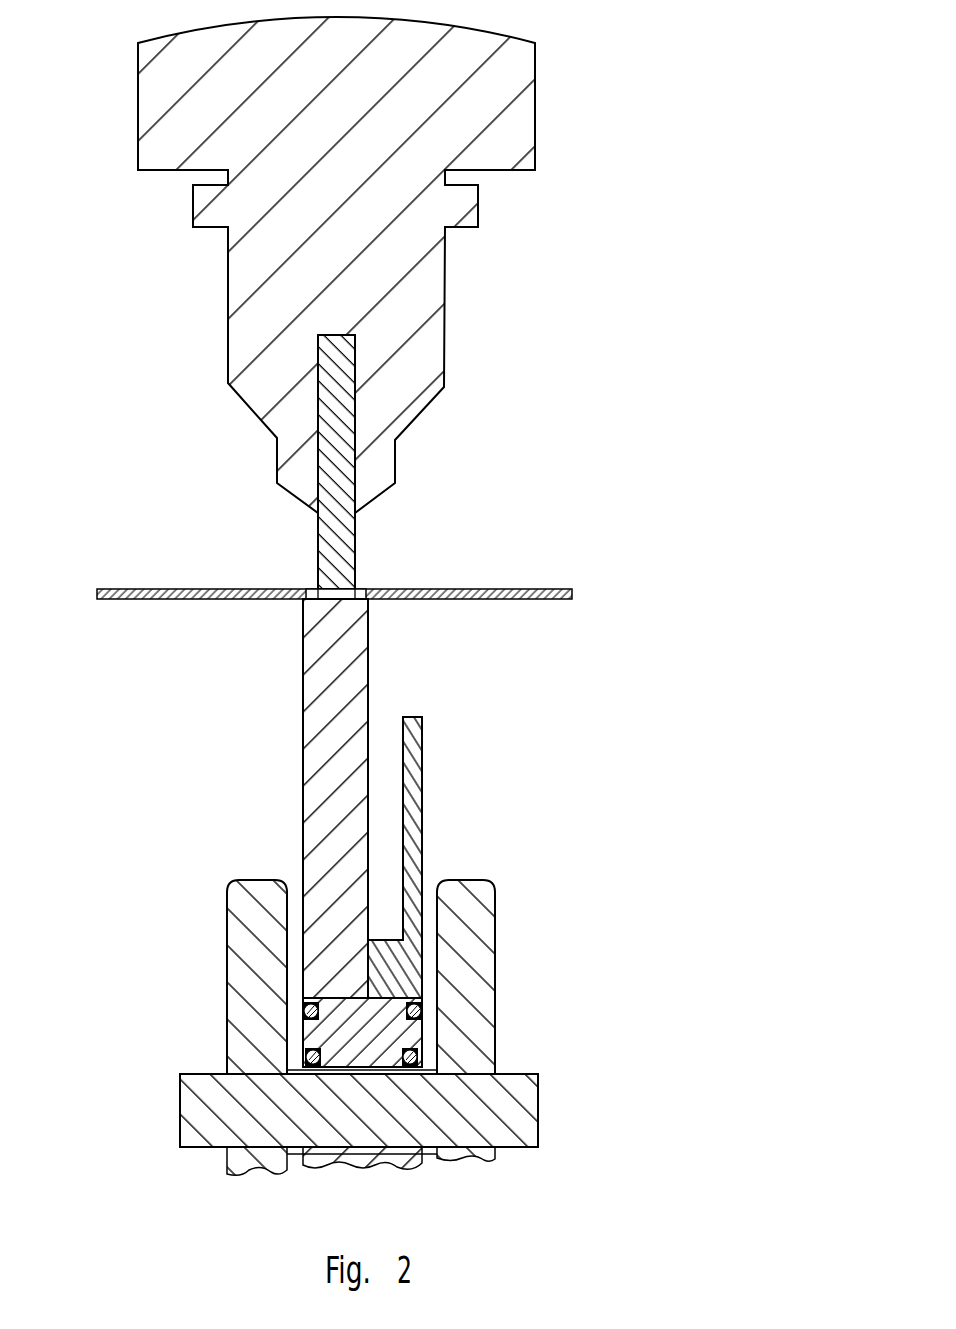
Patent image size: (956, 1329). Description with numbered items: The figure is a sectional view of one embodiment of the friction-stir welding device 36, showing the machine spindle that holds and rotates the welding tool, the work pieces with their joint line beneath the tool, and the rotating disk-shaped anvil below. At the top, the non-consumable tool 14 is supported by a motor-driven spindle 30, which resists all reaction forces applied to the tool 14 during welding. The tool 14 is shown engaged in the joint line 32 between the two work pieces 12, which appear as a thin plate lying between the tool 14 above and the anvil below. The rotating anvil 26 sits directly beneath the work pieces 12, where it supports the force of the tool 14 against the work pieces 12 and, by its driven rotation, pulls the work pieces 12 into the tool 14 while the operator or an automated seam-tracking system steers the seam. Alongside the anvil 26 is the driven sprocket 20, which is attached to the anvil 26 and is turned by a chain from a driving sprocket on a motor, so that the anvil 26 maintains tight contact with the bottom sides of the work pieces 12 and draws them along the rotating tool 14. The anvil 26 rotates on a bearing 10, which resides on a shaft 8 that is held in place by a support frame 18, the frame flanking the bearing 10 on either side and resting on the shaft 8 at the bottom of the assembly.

The friction-stir welding device 36 is at (652, 385).
The motor-driven spindle 30 is at (433, 277).
The non-consumable tool 14 is at (347, 465).
The work pieces 12 is at (490, 592).
The joint line 32 is at (280, 590).
The rotating anvil 26 is at (355, 682).
The driven sprocket 20 is at (417, 764).
The support frame 18 is at (488, 923).
The bearing 10 is at (424, 1012).
The shaft 8 is at (538, 1102).